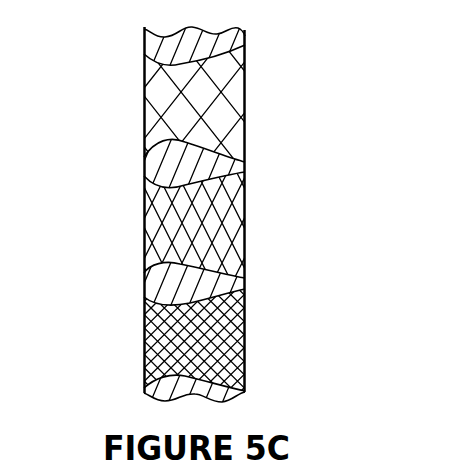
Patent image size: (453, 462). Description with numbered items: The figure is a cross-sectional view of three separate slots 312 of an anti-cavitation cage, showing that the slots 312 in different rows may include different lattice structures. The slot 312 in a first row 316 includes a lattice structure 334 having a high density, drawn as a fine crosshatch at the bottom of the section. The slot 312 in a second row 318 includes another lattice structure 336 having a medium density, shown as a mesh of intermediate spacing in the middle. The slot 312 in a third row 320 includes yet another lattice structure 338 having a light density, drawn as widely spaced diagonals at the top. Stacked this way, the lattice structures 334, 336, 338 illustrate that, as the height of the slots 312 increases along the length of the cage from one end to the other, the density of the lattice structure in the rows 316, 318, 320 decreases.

The slot 312 is at (240, 93).
The third row 320 is at (132, 116).
The second row 318 is at (132, 229).
The first row 316 is at (132, 342).
The lattice structure 338 is at (215, 124).
The lattice structure 336 is at (217, 240).
The lattice structure 334 is at (218, 353).